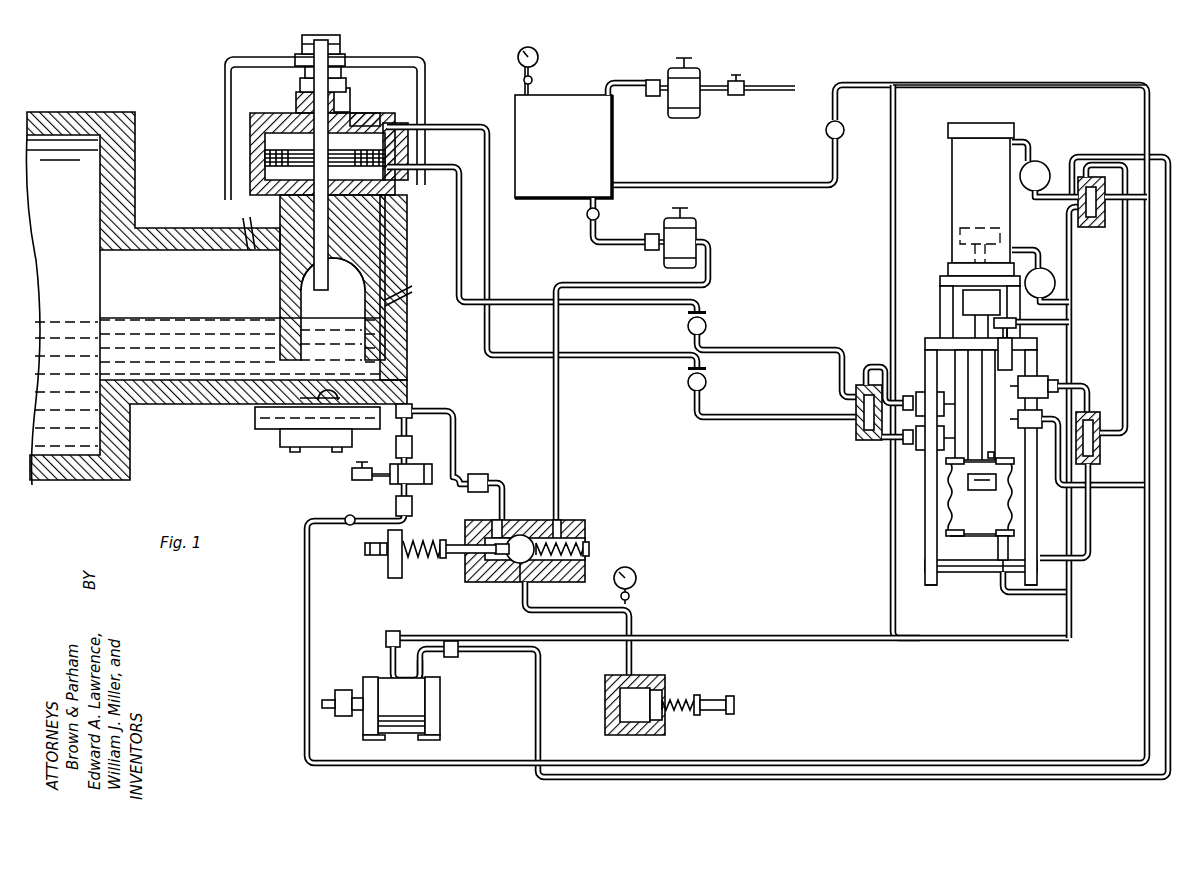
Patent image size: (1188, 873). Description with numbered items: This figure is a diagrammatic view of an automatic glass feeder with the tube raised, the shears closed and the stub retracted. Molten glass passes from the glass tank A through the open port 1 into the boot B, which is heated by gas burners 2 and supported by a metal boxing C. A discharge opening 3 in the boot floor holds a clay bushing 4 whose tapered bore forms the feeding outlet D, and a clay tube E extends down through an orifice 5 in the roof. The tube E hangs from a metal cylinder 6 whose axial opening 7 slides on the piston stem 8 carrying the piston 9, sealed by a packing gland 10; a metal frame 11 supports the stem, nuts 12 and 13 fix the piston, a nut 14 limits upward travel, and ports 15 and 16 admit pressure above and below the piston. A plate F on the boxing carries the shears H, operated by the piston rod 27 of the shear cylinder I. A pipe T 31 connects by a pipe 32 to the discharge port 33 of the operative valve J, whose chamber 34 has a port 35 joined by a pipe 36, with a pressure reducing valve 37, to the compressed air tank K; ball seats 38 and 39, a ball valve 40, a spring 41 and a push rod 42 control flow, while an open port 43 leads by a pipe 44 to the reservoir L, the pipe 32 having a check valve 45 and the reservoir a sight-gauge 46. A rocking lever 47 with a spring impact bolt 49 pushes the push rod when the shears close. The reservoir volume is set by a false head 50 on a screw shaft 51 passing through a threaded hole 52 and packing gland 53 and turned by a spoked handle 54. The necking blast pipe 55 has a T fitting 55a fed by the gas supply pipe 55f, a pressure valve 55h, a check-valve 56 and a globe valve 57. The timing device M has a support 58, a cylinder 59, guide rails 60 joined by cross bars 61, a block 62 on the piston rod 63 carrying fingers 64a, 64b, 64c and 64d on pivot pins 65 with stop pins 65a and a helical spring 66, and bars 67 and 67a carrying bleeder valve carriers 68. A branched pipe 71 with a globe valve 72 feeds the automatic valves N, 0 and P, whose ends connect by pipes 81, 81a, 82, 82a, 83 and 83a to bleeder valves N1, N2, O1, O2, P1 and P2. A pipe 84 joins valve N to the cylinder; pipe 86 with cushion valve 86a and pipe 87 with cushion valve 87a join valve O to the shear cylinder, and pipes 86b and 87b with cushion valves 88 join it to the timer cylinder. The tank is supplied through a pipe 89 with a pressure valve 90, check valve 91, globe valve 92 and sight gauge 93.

The glass tank A is at (153, 298).
The boot B is at (253, 287).
The metal boxing C is at (218, 430).
The feeding outlet D is at (408, 375).
The clay tube E is at (282, 288).
The metal casting or plate F is at (305, 420).
The shears H is at (316, 446).
The shear cylinder I is at (401, 708).
The operative valve J is at (535, 543).
The compressed air supply tank K is at (563, 146).
The reservoir L is at (624, 705).
The fluid pressure timing device M is at (1020, 153).
The automatic valve N is at (854, 412).
The hooded bleeder valve N1 is at (916, 392).
The hooded bleeder valve N2 is at (900, 450).
The hooded bleeder valve O1 is at (1003, 556).
The hooded bleeder valve O2 is at (1012, 360).
The automatic valve P is at (1093, 448).
The hooded bleeder valve P1 is at (1036, 376).
The hooded bleeder valve P2 is at (1018, 418).
The open port 1 is at (111, 315).
The gas burners 2 is at (255, 222).
The discharge opening 3 is at (300, 407).
The clay bushing 4 is at (298, 412).
The orifice 5 is at (278, 250).
The metal cylinder 6 is at (252, 160).
The axial opening 7 is at (297, 106).
The piston stem 8 is at (300, 85).
The piston 9 is at (325, 150).
The packing gland 10 is at (350, 97).
The metal frame 11 is at (325, 128).
The nut 12 is at (345, 45).
The nut 13 is at (296, 58).
The nut 14 is at (305, 72).
The port 15 is at (390, 112).
The port 16 is at (398, 175).
The piston rod 27 is at (330, 690).
The pipe T 31 is at (410, 404).
The pipe 32 is at (456, 418).
The discharge port 33 is at (500, 530).
The chamber 34 is at (518, 540).
The port 35 is at (561, 536).
The pipe 36 is at (562, 482).
The pressure reducing valve 37 is at (696, 232).
The ball seat 38 is at (492, 565).
The ball seat 39 is at (585, 560).
The ball valve 40 is at (485, 570).
The spring 41 is at (590, 548).
The push rod 42 is at (365, 549).
The open port 43 is at (518, 585).
The pipe 44 is at (578, 612).
The check valve 45 is at (479, 473).
The sight-gauge 46 is at (637, 581).
The rocking lever 47 is at (388, 572).
The spring impact bolt 49 is at (440, 549).
The false head or piston 50 is at (656, 690).
The screw shaft 51 is at (700, 698).
The threaded hole 52 is at (697, 716).
The packing gland 53 is at (712, 711).
The spoked handle 54 is at (734, 705).
The pipe 55 is at (395, 490).
The T fitting 55a is at (430, 460).
The gas supply pipe 55f is at (349, 474).
The pressure valve 55h is at (412, 508).
The check-valve 56 is at (412, 444).
The globe valve 57 is at (348, 517).
The base or support 58 is at (940, 296).
The fluid pressure cylinder 59 is at (981, 199).
The guide rails 60 is at (937, 480).
The cross bars 61 is at (945, 340).
The block 62 is at (980, 498).
The piston rod 63 is at (980, 410).
The actuating finger 64a is at (946, 462).
The actuating finger 64b is at (999, 447).
The actuating finger 64c is at (996, 534).
The actuating finger 64d is at (998, 548).
The pivot pins 65 is at (1000, 538).
The stop pins 65a is at (946, 532).
The helical spring 66 is at (1005, 517).
The bar 67 is at (925, 574).
The bar 67a is at (1040, 565).
The carriers 68 is at (934, 426).
The fluid pressure pipe 71 is at (766, 182).
The globe valve 72 is at (826, 132).
The pipe 81 is at (870, 375).
The pipe 81a is at (873, 451).
The pipe 82 is at (1055, 598).
The pipe 82a is at (1057, 422).
The pipe 83 is at (1090, 380).
The pipe 83a is at (1070, 525).
The pipe 84 is at (462, 126).
The pipe 86 is at (776, 353).
The cushion valve 86a is at (455, 658).
The pipe 86b is at (1032, 146).
The pipe 87 is at (775, 633).
The cushion valve 87a is at (398, 652).
The pipe 87b is at (1040, 256).
The cushion valves 88 is at (1043, 166).
The pipe 89 is at (769, 97).
The pressure valve 90 is at (700, 114).
The check valve 91 is at (648, 78).
The globe valve 92 is at (740, 80).
The sight gauge 93 is at (540, 62).
The automatic valve 0 is at (1105, 220).